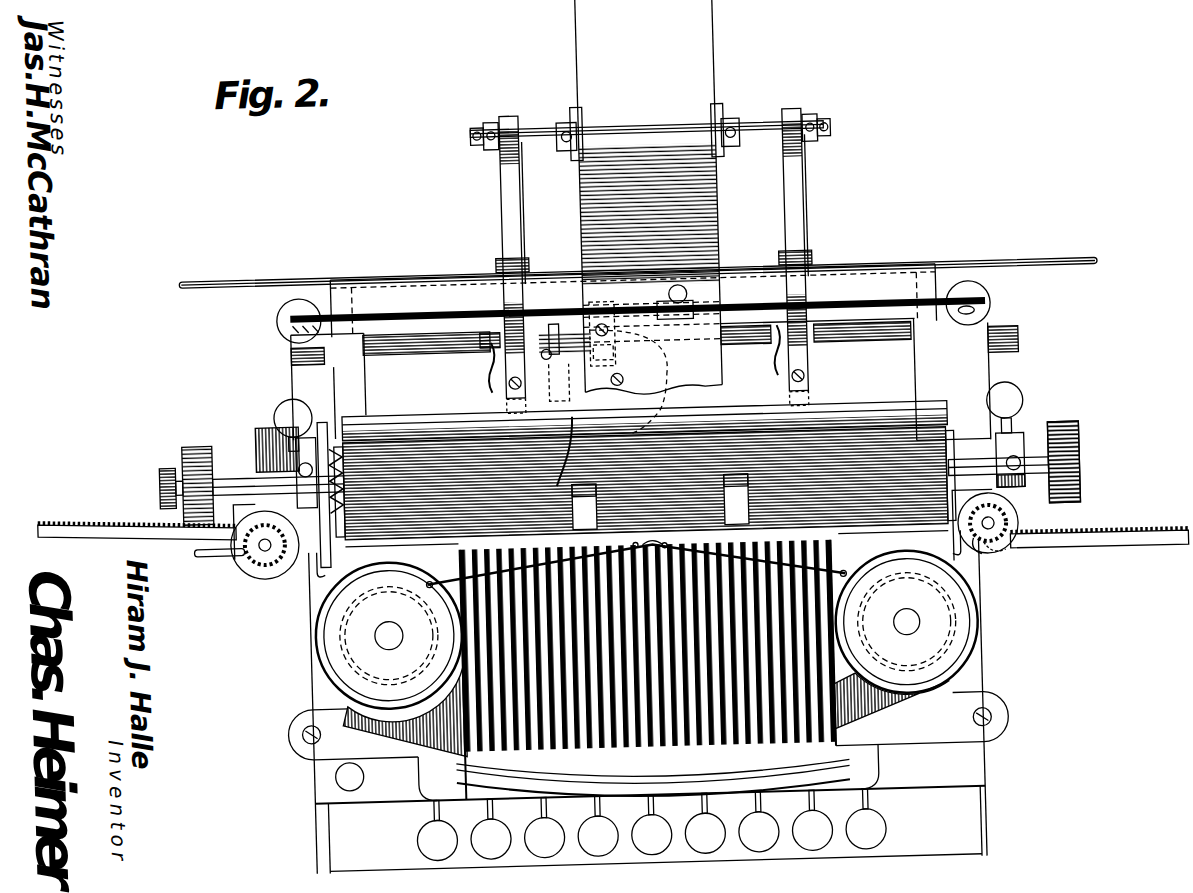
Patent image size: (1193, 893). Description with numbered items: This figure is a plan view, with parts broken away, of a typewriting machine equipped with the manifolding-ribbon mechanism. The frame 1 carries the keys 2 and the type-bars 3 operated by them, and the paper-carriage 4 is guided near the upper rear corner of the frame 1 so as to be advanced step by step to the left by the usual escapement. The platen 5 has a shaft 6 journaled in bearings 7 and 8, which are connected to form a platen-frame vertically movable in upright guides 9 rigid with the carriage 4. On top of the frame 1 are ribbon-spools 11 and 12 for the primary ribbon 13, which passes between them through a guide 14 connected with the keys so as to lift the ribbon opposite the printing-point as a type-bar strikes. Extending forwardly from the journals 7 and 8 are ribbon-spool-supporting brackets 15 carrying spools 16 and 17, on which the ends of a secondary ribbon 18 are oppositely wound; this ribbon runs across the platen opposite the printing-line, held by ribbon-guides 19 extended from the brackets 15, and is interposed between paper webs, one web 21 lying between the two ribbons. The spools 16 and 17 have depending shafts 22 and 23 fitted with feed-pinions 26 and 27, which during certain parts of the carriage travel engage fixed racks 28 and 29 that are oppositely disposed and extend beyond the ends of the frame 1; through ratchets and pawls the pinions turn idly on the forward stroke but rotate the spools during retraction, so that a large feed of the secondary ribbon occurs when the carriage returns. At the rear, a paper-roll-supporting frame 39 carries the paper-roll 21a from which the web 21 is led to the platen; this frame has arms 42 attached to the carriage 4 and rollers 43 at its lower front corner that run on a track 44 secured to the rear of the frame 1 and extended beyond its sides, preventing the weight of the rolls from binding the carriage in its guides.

The frame 1 is at (990, 693).
The keys 2 is at (412, 832).
The type-bars 3 is at (470, 700).
The paper-carriage 4 is at (656, 387).
The platen 5 is at (870, 430).
The platen shaft 6 is at (1034, 470).
The bearing 7 is at (300, 495).
The bearing 8 is at (1010, 454).
The upright guides 9 is at (282, 420).
The ribbon-spool 11 is at (390, 661).
The ribbon-spool 12 is at (906, 639).
The primary ribbon 13 is at (638, 560).
The guide 14 is at (654, 543).
The ribbon-spool-supporting brackets 15 is at (250, 470).
The ribbon-spool 16 is at (270, 570).
The ribbon-spool 17 is at (990, 562).
The secondary ribbon 18 is at (646, 547).
The ribbon-guides 19 is at (639, 559).
The paper web 21 is at (635, 359).
The paper-roll 21a is at (729, 18).
The spool-shaft 22 is at (252, 560).
The spool-shaft 23 is at (1005, 556).
The feed-pinion 26 is at (282, 575).
The feed-pinion 27 is at (1022, 535).
The rack 28 is at (124, 500).
The rack 29 is at (1099, 527).
The paper-roll-supporting frame 39 is at (512, 180).
The arms 42 is at (512, 385).
The rollers 43 is at (507, 264).
The track 44 is at (240, 272).